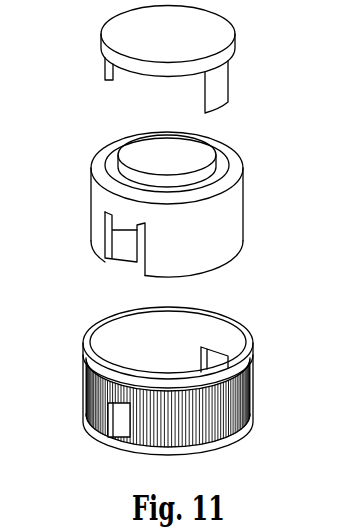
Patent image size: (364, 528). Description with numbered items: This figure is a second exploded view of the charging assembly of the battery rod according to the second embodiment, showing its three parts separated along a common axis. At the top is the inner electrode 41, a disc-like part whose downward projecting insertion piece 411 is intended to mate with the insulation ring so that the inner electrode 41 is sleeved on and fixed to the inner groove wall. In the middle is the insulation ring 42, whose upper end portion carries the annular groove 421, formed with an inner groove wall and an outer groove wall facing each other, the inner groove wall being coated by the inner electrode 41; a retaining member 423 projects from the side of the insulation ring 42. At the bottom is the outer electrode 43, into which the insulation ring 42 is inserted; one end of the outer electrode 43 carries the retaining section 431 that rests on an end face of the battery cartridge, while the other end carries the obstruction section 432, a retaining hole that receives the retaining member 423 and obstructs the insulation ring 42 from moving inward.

The inner electrode 41 is at (207, 60).
The insertion piece 411 is at (225, 98).
The insulation ring 42 is at (169, 204).
The annular groove 421 is at (222, 163).
The retaining member 423 is at (118, 253).
The outer electrode 43 is at (180, 381).
The retaining section 431 is at (251, 343).
The obstruction section 432 is at (120, 425).